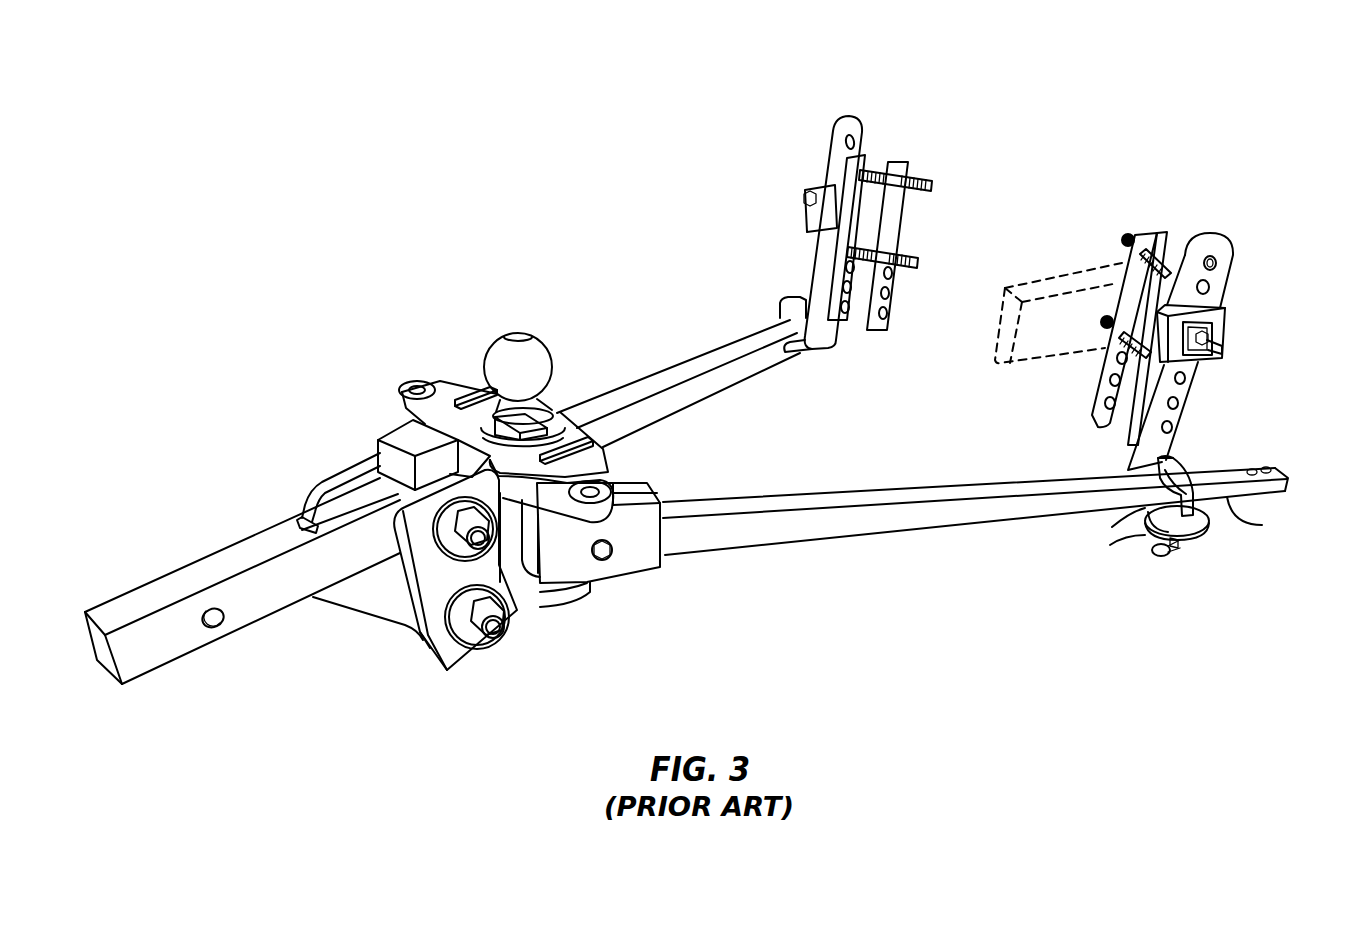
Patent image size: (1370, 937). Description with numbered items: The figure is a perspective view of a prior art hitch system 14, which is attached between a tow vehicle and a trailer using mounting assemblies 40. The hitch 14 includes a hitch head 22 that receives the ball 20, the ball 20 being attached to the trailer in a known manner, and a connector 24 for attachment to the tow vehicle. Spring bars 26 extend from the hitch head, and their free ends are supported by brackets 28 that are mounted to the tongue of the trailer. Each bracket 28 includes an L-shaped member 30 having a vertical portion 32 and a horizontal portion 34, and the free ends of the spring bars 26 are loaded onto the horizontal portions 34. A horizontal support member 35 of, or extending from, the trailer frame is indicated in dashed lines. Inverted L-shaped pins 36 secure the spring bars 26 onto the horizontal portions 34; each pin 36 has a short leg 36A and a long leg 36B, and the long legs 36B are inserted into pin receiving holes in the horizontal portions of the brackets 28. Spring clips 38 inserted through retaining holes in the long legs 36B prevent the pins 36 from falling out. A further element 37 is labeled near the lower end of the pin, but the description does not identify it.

The hitch system 14 is at (420, 279).
The ball 20 is at (533, 334).
The hitch head 22 is at (447, 383).
The connector 24 is at (270, 615).
The spring bars 26 is at (905, 525).
The brackets 28 is at (850, 108).
The L-shaped member 30 is at (813, 247).
The vertical portion 32 is at (1218, 280).
The horizontal portion 34 is at (800, 352).
The horizontal support member 35 is at (1058, 275).
The inverted L-shaped pins 36 is at (778, 295).
The short leg 36A is at (1177, 455).
The long leg 36B is at (1227, 502).
The pin 37 is at (1152, 545).
The spring clips 38 is at (1175, 555).
The mounting assemblies 40 is at (920, 108).